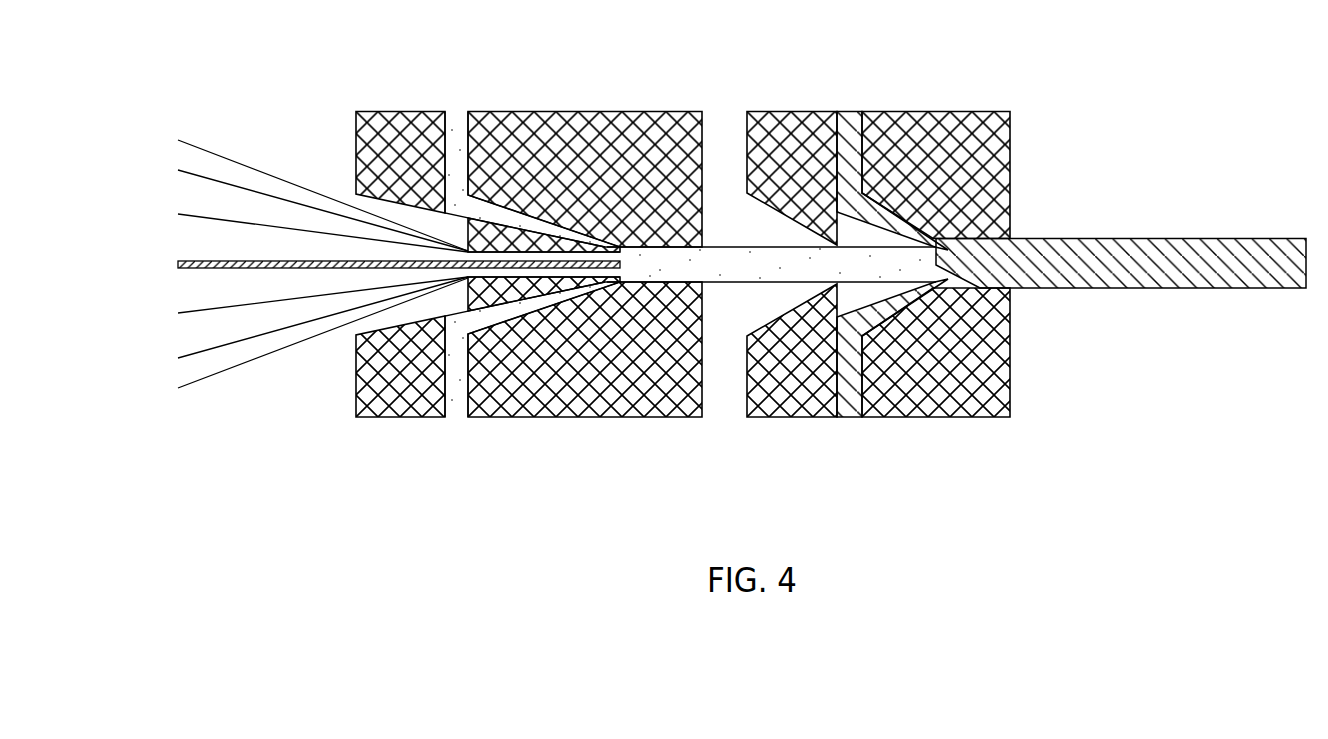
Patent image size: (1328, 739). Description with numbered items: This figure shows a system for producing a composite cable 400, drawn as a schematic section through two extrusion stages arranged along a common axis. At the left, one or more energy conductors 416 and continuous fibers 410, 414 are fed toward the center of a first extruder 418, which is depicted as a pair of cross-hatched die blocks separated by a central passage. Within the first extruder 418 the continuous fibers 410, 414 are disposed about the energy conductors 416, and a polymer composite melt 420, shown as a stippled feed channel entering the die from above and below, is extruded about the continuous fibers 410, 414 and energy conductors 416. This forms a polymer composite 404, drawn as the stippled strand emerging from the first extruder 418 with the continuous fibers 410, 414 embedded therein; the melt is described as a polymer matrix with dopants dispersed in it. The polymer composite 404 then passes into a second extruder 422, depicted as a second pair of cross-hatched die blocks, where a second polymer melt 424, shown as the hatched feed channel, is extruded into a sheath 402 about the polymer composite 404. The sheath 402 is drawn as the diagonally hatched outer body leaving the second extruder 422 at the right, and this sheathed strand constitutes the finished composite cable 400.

The composite cable 400 is at (1223, 215).
The sheath 402 is at (1090, 285).
The polymer composite 404 is at (762, 276).
The continuous fibers 410 is at (205, 378).
The continuous fibers 414 is at (193, 353).
The energy conductors 416 is at (181, 267).
The first extruder 418 is at (575, 417).
The polymer composite melt 420 is at (455, 112).
The second extruder 422 is at (930, 417).
The second polymer melt 424 is at (850, 112).